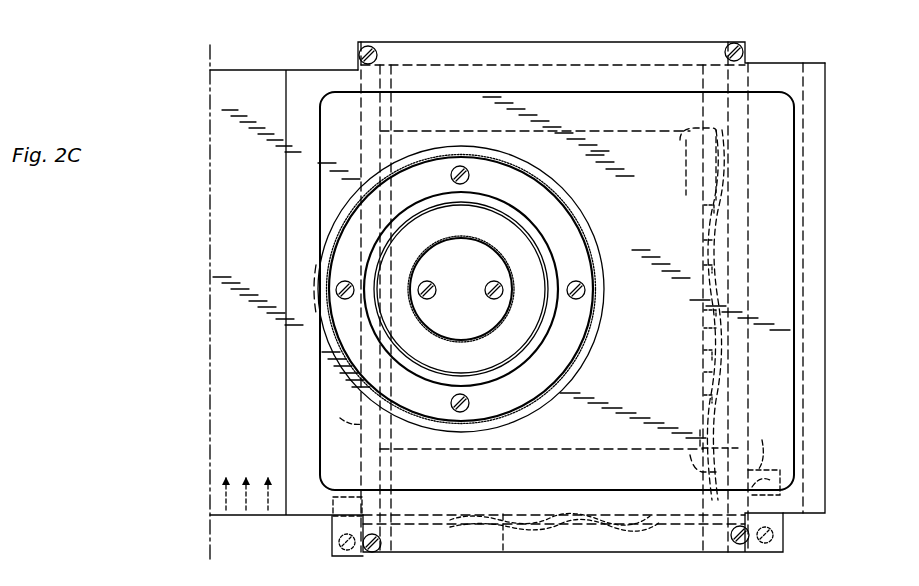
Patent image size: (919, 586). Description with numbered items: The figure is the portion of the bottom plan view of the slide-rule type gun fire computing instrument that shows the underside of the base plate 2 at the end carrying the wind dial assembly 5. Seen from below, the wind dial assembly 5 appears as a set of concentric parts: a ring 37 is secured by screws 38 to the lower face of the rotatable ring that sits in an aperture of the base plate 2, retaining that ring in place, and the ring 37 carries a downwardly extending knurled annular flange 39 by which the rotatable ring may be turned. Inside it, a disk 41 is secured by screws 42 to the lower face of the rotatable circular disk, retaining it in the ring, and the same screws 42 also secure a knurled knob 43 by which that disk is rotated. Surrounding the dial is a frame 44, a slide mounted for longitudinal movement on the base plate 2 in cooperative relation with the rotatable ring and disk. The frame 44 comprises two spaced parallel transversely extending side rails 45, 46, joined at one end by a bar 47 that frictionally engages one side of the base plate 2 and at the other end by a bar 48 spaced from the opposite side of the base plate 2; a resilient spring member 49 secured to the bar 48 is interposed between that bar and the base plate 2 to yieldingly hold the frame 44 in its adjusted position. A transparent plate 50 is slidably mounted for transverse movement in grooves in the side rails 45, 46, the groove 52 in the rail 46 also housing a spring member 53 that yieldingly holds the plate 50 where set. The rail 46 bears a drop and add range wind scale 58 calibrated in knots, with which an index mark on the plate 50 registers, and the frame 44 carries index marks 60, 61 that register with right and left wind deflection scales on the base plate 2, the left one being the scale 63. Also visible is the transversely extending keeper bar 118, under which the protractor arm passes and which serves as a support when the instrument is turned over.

The base plate 2 is at (340, 112).
The wind dial assembly 5 is at (356, 150).
The ring 37 is at (598, 345).
The screws 38 is at (588, 291).
The knurled annular flange 39 is at (584, 244).
The disk 41 is at (405, 257).
The screws 42 is at (490, 302).
The knurled knob 43 is at (461, 289).
The frame 44 is at (358, 435).
The side rail 45 is at (344, 409).
The side rail 46 is at (748, 302).
The bar 47 is at (638, 42).
The bar 48 is at (640, 556).
The resilient spring member 49 is at (505, 556).
The transparent plate 50 is at (570, 450).
The groove 52 is at (700, 452).
The spring member 53 is at (712, 196).
The drop and add range wind scale 58 is at (706, 312).
The index mark 60 is at (332, 508).
The index mark 61 is at (770, 472).
The left wind deflection scale 63 is at (764, 443).
The keeper bar 118 is at (308, 585).